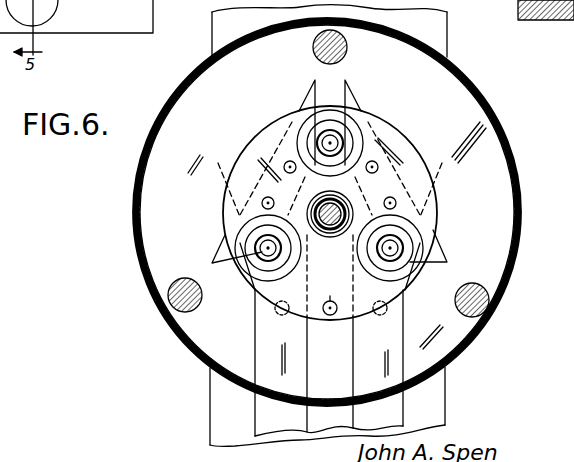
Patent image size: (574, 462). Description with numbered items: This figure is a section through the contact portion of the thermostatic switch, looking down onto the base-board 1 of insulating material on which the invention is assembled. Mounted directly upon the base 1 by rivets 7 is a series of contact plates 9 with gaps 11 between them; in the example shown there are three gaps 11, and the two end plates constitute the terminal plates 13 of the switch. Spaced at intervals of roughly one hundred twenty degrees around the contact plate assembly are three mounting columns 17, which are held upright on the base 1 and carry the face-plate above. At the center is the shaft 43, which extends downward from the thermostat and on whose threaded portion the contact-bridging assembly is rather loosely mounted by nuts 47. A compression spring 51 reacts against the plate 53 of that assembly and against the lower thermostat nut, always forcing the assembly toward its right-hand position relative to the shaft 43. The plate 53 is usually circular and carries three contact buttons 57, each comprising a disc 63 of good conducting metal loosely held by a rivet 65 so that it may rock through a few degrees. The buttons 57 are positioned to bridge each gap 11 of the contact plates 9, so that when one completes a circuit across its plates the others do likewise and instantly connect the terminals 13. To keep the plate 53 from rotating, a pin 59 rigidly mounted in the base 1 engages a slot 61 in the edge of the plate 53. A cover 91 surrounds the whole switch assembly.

The base-board 1 is at (437, 409).
The rivets 7 is at (262, 203).
The contact plates 9 is at (310, 100).
The gaps 11 is at (330, 99).
The terminal plates 13 is at (263, 415).
The mounting columns 17 is at (313, 48).
The shaft 43 is at (330, 228).
The nuts 47 is at (352, 204).
The compression spring 51 is at (312, 200).
The plate 53 is at (423, 191).
The contact buttons 57 is at (355, 134).
The pin 59 is at (330, 316).
The slot 61 is at (327, 290).
The disc 63 is at (298, 143).
The rivet 65 is at (324, 141).
The cover 91 is at (176, 97).